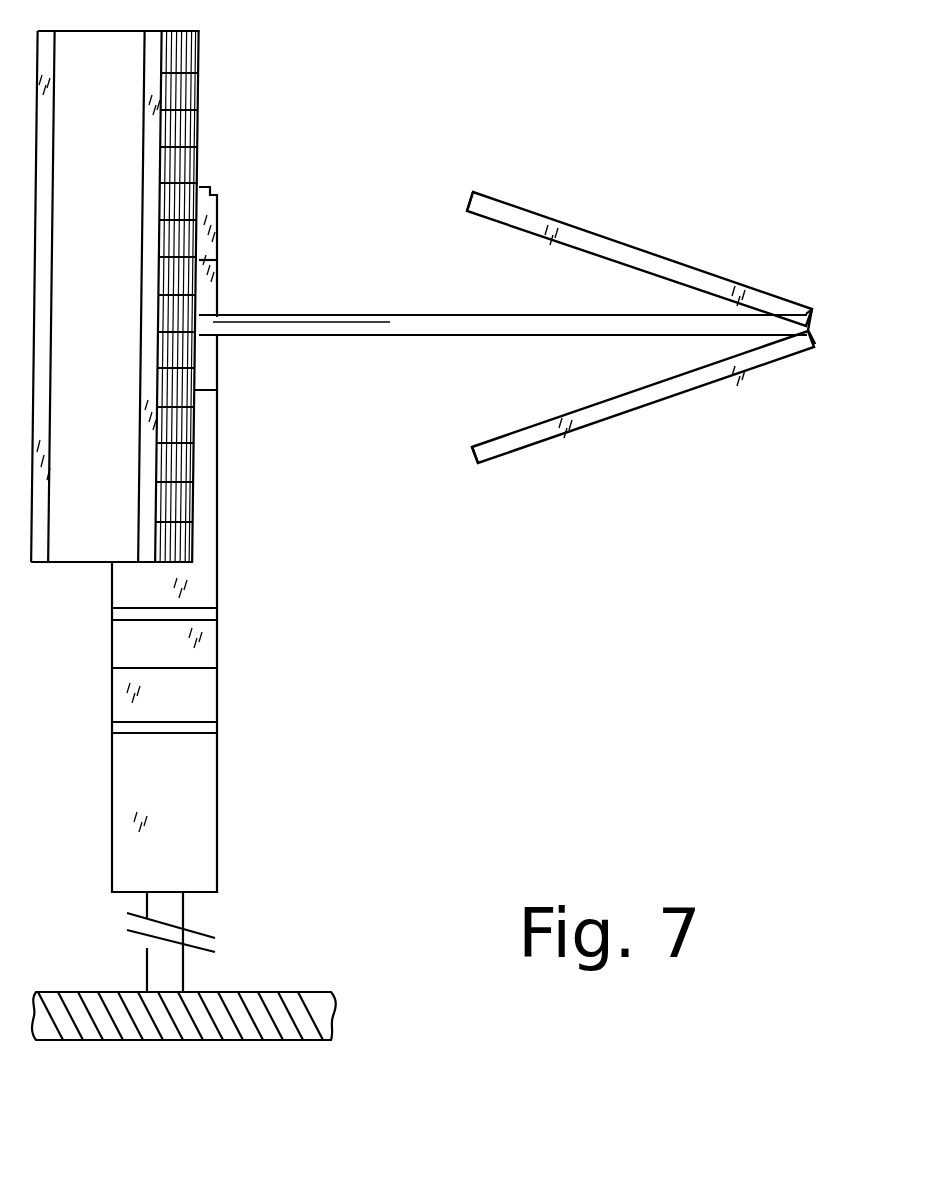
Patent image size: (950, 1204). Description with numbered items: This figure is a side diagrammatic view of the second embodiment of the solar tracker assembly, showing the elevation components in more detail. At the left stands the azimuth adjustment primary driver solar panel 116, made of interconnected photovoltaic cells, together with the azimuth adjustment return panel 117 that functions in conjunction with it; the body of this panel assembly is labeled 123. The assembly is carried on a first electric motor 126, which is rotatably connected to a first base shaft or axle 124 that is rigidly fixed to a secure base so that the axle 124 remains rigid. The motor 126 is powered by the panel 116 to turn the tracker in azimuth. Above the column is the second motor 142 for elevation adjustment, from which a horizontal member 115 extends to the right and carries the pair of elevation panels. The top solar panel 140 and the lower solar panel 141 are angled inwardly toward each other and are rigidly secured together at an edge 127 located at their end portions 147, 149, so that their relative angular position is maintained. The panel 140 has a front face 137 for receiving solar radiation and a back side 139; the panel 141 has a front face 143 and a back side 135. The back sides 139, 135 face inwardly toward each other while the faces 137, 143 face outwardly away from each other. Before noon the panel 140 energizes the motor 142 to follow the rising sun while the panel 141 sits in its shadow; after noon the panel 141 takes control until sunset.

The arm 115 is at (312, 313).
The azimuth adjustment primary driver solar panel 116 is at (208, 106).
The azimuth adjustment return panel 117 is at (28, 532).
The panel 123 is at (109, 85).
The first base shaft or axle 124 is at (183, 917).
The first electric motor 126 is at (235, 818).
The edge 127 is at (820, 303).
The back side 135 is at (587, 407).
The front side or face 137 is at (613, 238).
The back side 139 is at (567, 249).
The top solar panel 140 is at (486, 186).
The lower solar panel 141 is at (475, 470).
The second motor 142 is at (232, 230).
The front side or face 143 is at (630, 416).
The end portion 147 is at (800, 302).
The end portion 149 is at (800, 352).